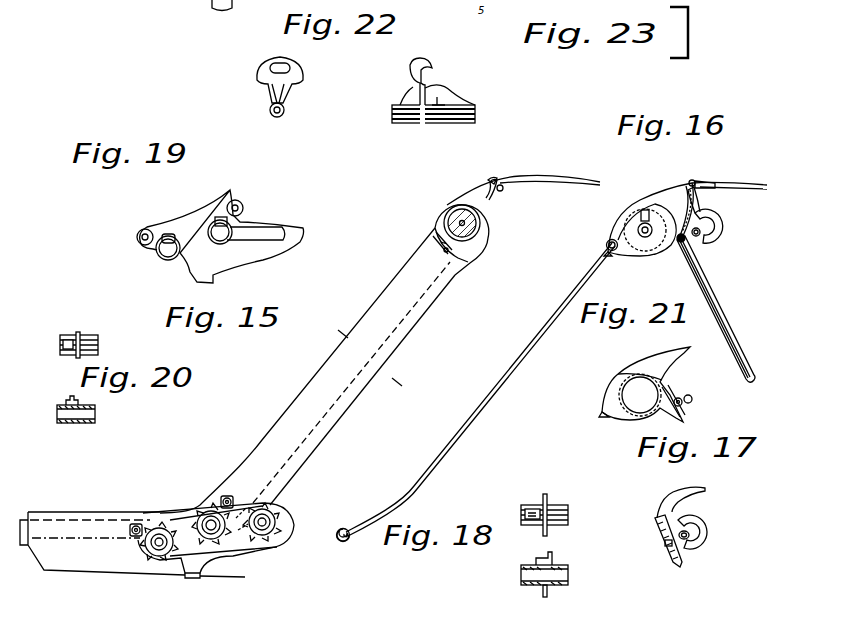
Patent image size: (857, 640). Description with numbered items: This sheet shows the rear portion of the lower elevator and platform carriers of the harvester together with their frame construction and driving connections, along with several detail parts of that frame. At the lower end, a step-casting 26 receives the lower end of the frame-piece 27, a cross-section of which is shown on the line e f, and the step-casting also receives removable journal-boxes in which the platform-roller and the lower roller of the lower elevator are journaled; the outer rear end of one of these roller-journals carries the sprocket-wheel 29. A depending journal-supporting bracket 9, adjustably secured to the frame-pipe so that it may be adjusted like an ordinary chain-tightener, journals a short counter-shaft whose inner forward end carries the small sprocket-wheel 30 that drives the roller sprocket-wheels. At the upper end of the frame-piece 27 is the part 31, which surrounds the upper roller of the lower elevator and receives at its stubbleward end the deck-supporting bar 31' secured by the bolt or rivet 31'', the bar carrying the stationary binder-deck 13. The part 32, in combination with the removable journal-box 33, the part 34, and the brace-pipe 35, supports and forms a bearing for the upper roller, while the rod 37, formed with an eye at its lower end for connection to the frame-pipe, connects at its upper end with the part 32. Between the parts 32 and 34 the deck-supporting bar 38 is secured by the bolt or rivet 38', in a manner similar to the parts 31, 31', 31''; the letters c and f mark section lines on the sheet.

In FIG. 22, the journal-supporting bracket 9 is at (358, 90).
In FIG. 15, the stationary binder-deck 13 is at (523, 182).
In FIG. 16, the stationary binder-deck 13 is at (729, 177).
In FIG. 15, the step-casting 26 is at (212, 534).
In FIG. 19, the step-casting 26 is at (220, 236).
In FIG. 15, the frame-piece 27 is at (307, 370).
In FIG. 23, the frame-piece 27 is at (691, 32).
In FIG. 15, the sprocket-wheel 29 is at (203, 523).
In FIG. 15, the small sprocket-wheel 30 is at (278, 512).
In FIG. 15, the upper frame part 31 is at (455, 227).
In FIG. 15, the deck-supporting bar 31' is at (518, 192).
In FIG. 15, the bolt or rivet 31'' is at (482, 167).
In FIG. 16, the bearing part 32 is at (612, 229).
In FIG. 21, the bearing part 32 is at (638, 384).
In FIG. 16, the removable journal-box 33 is at (628, 246).
In FIG. 18, the removable journal-box 33 is at (542, 545).
In FIG. 16, the bearing part 34 is at (708, 215).
In FIG. 17, the bearing part 34 is at (670, 527).
In FIG. 16, the brace-pipe 35 is at (716, 308).
In FIG. 15, the rod 37 is at (476, 392).
In FIG. 15, the deck-supporting bar 38 is at (145, 541).
In FIG. 16, the deck-supporting bar 38 is at (723, 191).
In FIG. 16, the bolt or rivet 38' is at (671, 173).
In FIG. 15, the point c is at (337, 330).
In FIG. 15, the point f is at (393, 374).